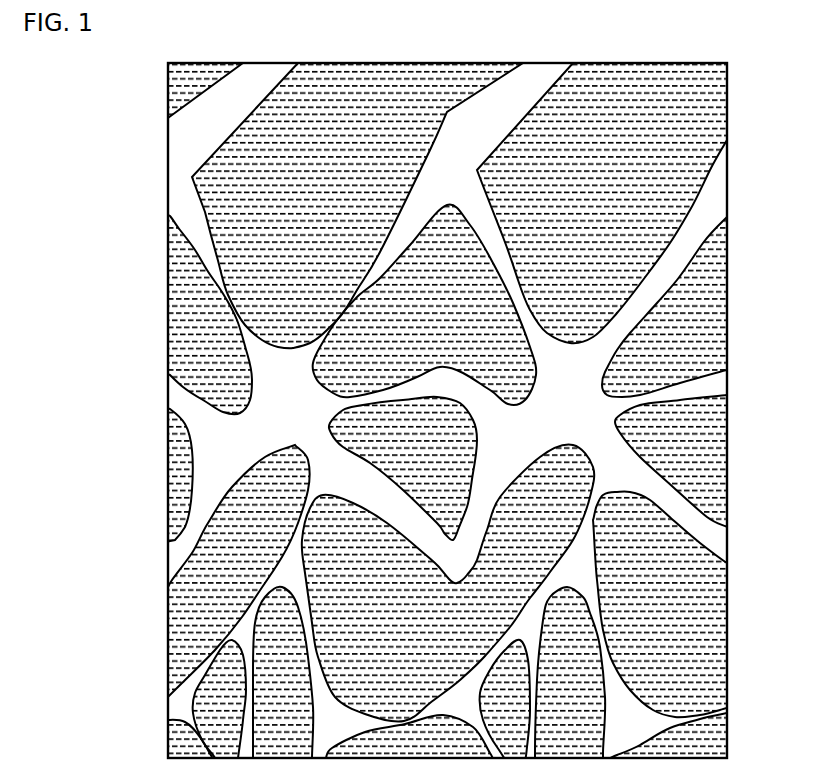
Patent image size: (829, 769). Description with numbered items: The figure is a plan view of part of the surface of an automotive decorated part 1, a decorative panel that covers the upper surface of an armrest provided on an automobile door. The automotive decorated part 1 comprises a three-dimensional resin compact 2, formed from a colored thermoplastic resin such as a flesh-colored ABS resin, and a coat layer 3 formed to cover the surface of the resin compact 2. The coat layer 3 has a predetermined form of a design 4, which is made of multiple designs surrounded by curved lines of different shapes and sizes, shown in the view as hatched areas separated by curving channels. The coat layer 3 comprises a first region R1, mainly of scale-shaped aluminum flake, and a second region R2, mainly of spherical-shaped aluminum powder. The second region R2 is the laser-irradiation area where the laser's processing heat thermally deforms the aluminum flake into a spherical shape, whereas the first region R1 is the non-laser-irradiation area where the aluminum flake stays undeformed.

The automotive decorated part 1 is at (113, 101).
The resin compact 2 is at (727, 542).
The coat layer 3 is at (712, 196).
The design 4 is at (206, 212).
The first region R1 is at (182, 390).
The second region R2 is at (712, 410).